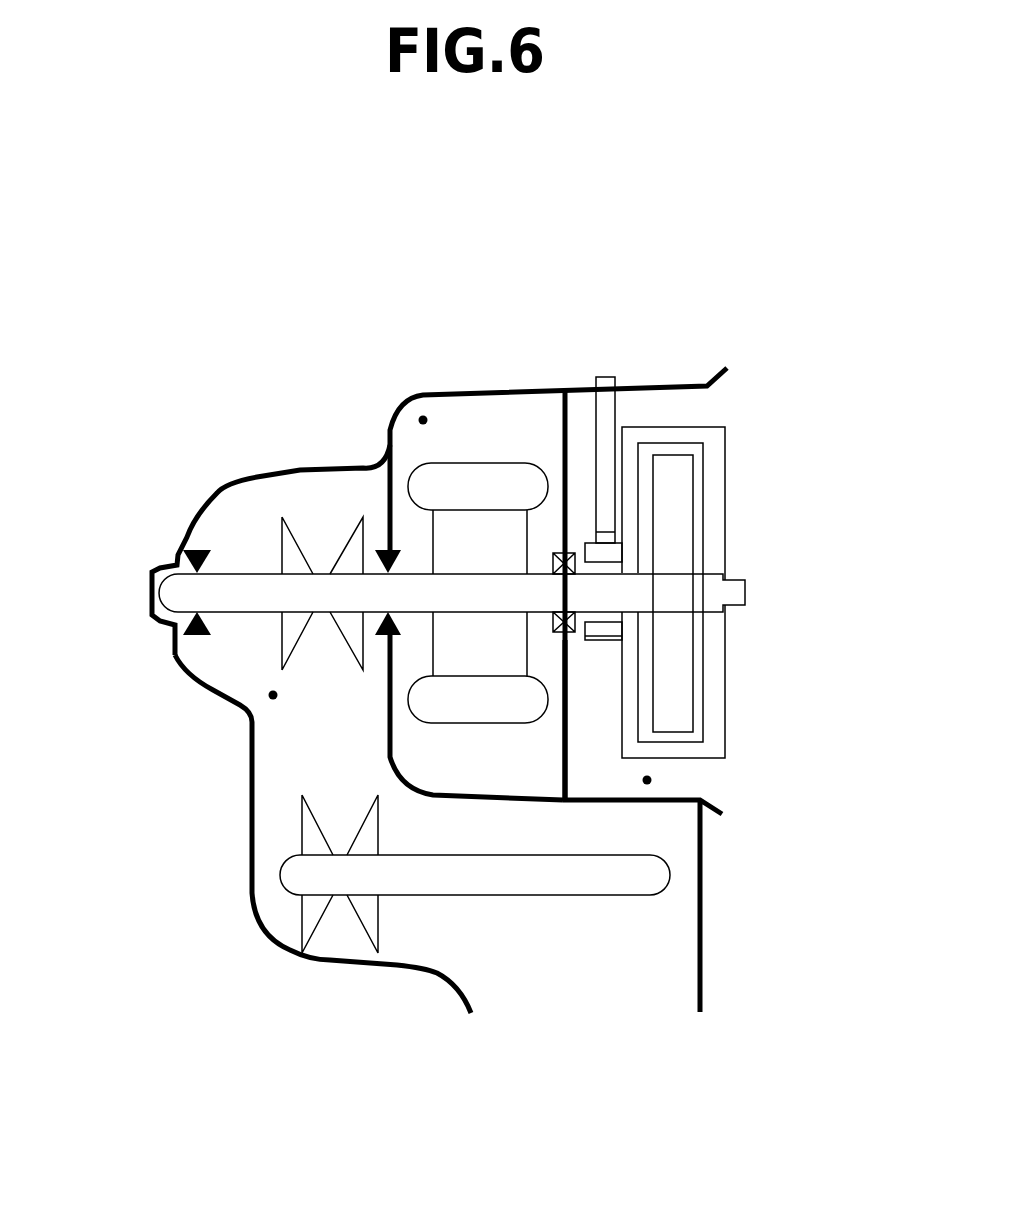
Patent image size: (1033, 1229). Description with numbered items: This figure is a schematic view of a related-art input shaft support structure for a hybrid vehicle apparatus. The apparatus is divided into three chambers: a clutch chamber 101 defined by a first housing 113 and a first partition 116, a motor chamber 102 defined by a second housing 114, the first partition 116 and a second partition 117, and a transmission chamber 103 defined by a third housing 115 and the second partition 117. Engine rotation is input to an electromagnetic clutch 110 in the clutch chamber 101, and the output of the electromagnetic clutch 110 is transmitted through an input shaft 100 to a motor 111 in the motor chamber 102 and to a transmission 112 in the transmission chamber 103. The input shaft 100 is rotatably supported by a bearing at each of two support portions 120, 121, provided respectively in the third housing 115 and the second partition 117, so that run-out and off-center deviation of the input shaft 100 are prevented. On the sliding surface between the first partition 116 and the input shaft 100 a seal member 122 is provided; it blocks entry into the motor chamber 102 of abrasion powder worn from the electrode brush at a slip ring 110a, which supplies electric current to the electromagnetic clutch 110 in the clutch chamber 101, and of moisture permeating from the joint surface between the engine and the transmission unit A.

The input shaft 100 is at (622, 587).
The clutch chamber 101 is at (647, 780).
The motor chamber 102 is at (423, 420).
The transmission chamber 103 is at (273, 695).
The electromagnetic clutch 110 is at (735, 487).
The slip ring 110a is at (598, 641).
The motor 111 is at (555, 672).
The transmission 112 is at (300, 748).
The first housing 113 is at (685, 383).
The second housing 114 is at (483, 390).
The third housing 115 is at (217, 493).
The first partition 116 is at (560, 737).
The second partition 117 is at (388, 490).
The support portion 120 is at (197, 548).
The support portion 121 is at (383, 547).
The seal member 122 is at (555, 622).
The transmission unit A is at (448, 380).